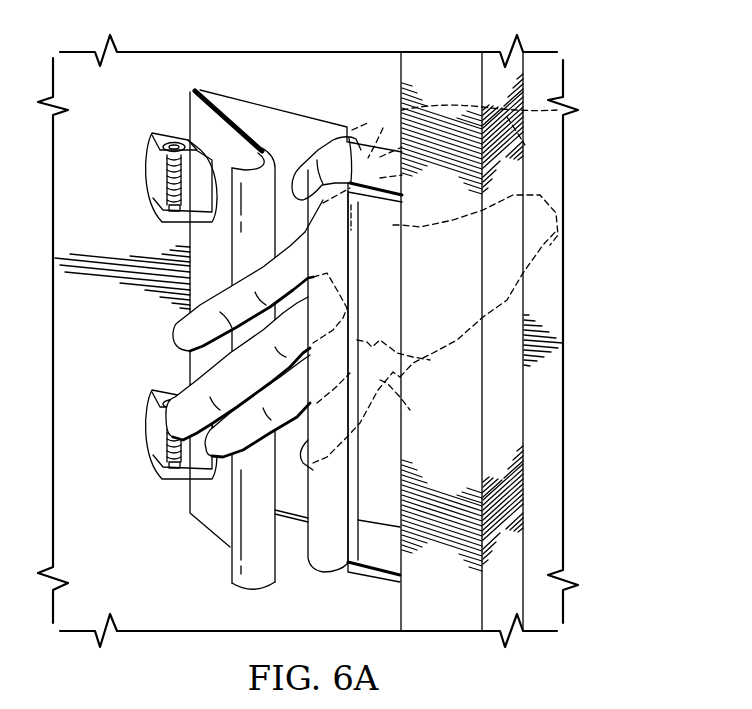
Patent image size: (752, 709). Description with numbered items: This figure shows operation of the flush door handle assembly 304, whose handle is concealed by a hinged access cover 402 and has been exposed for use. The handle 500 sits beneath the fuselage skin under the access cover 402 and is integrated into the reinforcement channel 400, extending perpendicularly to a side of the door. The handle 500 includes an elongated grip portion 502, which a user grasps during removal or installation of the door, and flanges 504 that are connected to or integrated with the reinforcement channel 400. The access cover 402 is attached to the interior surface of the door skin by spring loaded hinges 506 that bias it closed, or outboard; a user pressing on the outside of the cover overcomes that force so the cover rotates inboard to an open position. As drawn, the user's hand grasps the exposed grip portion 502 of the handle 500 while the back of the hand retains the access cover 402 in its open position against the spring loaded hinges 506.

The door handle assembly 304 is at (187, 73).
The reinforcement channel 400 is at (503, 402).
The access cover 402 is at (253, 137).
The handle 500 is at (384, 341).
The grip portion 502 is at (360, 275).
The flanges 504 is at (371, 158).
The spring loaded hinges 506 is at (145, 167).